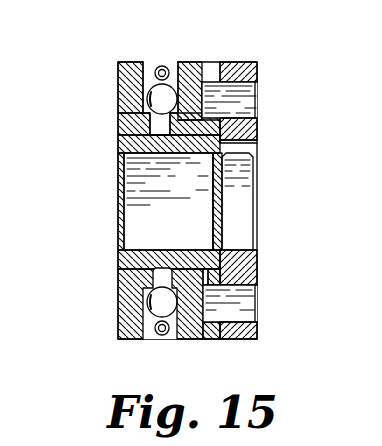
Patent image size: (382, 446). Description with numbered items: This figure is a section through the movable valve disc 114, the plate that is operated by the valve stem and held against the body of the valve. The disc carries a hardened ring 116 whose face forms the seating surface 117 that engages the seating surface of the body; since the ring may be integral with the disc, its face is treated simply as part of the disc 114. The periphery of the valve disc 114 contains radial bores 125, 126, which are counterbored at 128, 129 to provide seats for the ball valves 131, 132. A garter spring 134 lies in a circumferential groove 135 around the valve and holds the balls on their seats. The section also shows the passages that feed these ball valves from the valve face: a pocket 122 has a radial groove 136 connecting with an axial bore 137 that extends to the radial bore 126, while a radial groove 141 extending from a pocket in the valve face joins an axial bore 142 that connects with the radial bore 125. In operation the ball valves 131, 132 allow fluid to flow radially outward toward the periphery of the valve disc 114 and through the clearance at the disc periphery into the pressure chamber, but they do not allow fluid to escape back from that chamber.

The movable valve disc 114 is at (118, 115).
The hardened ring 116 is at (221, 64).
The seating surface 117 is at (258, 324).
The pocket 122 is at (240, 84).
The radial bore 125 is at (152, 280).
The radial bore 126 is at (155, 123).
The counterbore 128 is at (154, 326).
The counterbore 129 is at (143, 76).
The ball valve 131 is at (147, 302).
The ball valve 132 is at (147, 98).
The garter spring 134 is at (164, 66).
The circumferential groove 135 is at (176, 78).
The radial groove 136 is at (258, 128).
The axial bore 137 is at (202, 158).
The radial groove 141 is at (212, 280).
The axial bore 142 is at (168, 201).